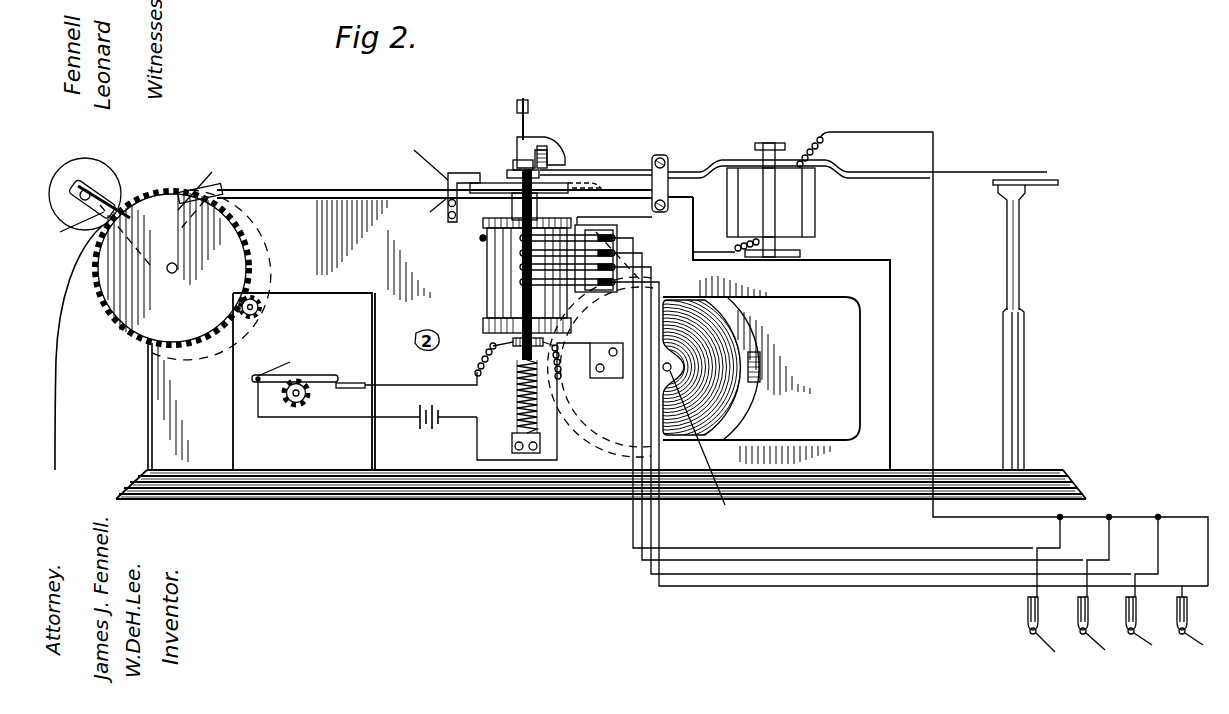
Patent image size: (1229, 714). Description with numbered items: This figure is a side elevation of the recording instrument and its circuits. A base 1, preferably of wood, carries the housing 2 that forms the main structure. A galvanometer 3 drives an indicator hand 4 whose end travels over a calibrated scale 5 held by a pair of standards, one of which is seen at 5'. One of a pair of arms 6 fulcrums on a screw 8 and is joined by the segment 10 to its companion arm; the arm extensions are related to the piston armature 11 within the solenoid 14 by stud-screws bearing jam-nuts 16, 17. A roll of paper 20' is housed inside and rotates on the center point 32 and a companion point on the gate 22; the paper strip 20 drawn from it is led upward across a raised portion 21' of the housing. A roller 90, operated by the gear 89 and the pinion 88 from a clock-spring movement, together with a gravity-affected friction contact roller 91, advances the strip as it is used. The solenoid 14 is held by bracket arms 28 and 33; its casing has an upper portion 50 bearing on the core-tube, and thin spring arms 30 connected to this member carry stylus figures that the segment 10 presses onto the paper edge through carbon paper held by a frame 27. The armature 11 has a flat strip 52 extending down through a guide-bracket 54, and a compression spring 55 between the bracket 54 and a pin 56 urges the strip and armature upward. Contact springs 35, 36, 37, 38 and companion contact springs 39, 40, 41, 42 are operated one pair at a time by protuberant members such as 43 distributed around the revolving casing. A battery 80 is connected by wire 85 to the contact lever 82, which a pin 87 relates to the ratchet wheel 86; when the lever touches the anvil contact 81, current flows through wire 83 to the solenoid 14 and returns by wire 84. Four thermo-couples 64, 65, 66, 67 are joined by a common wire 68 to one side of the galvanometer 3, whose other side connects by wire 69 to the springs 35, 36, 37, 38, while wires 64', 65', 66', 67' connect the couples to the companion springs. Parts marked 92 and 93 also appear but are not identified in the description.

The base 1 is at (1060, 476).
The housing 2 is at (878, 392).
The galvanometer 3 is at (795, 203).
The indicator hand 4 is at (875, 175).
The calibrated scale 5 is at (1040, 245).
The standard 5' is at (1035, 389).
The arm 6 is at (558, 145).
The screw 8 is at (668, 160).
The segment 10 is at (560, 170).
The piston armature 11 is at (513, 163).
The solenoid 14 is at (487, 314).
The jam-nut 16 is at (528, 105).
The jam-nut 17 is at (520, 145).
The paper strip 20 is at (353, 311).
The roll of paper 20' is at (673, 367).
The raised portion of housing 21' is at (423, 219).
The gate 22 is at (758, 372).
The frame 27 is at (570, 190).
The bracket arm 28 is at (422, 155).
The spring arm 30 is at (455, 173).
The center point 32 is at (703, 444).
The bracket arm 33 is at (598, 378).
The contact spring 35 is at (520, 238).
The contact spring 36 is at (520, 253).
The contact spring 37 is at (520, 267).
The contact spring 38 is at (520, 282).
The companion contact spring 39 is at (612, 238).
The companion contact spring 40 is at (612, 253).
The companion contact spring 41 is at (612, 267).
The companion contact spring 42 is at (612, 282).
The protuberant member 43 is at (480, 238).
The upper portion of casing 50 is at (512, 208).
The flat strip 52 is at (550, 357).
The guide-bracket 54 is at (540, 448).
The compression spring 55 is at (517, 392).
The pin 56 is at (500, 356).
The thermo-couple 64 is at (1198, 625).
The wire 64' is at (1011, 605).
The thermo-couple 65 is at (1146, 626).
The wire 65' is at (1013, 563).
The thermo-couple 66 is at (1098, 632).
The wire 66' is at (975, 555).
The thermo-couple 67 is at (1050, 633).
The wire 67' is at (966, 555).
The common wire 68 is at (890, 132).
The wire 69 is at (640, 236).
The battery 80 is at (430, 430).
The anvil contact 81 is at (350, 388).
The contact lever 82 is at (295, 376).
The wire 83 is at (445, 385).
The wire 84 is at (557, 428).
The wire 85 is at (345, 414).
The ratchet wheel 86 is at (302, 398).
The pin 87 is at (274, 360).
The pinion 88 is at (258, 312).
The gear 89 is at (205, 182).
The roller 90 is at (222, 186).
The friction contact roller 91 is at (108, 180).
The crank 92 is at (95, 198).
The arm 93 is at (86, 216).